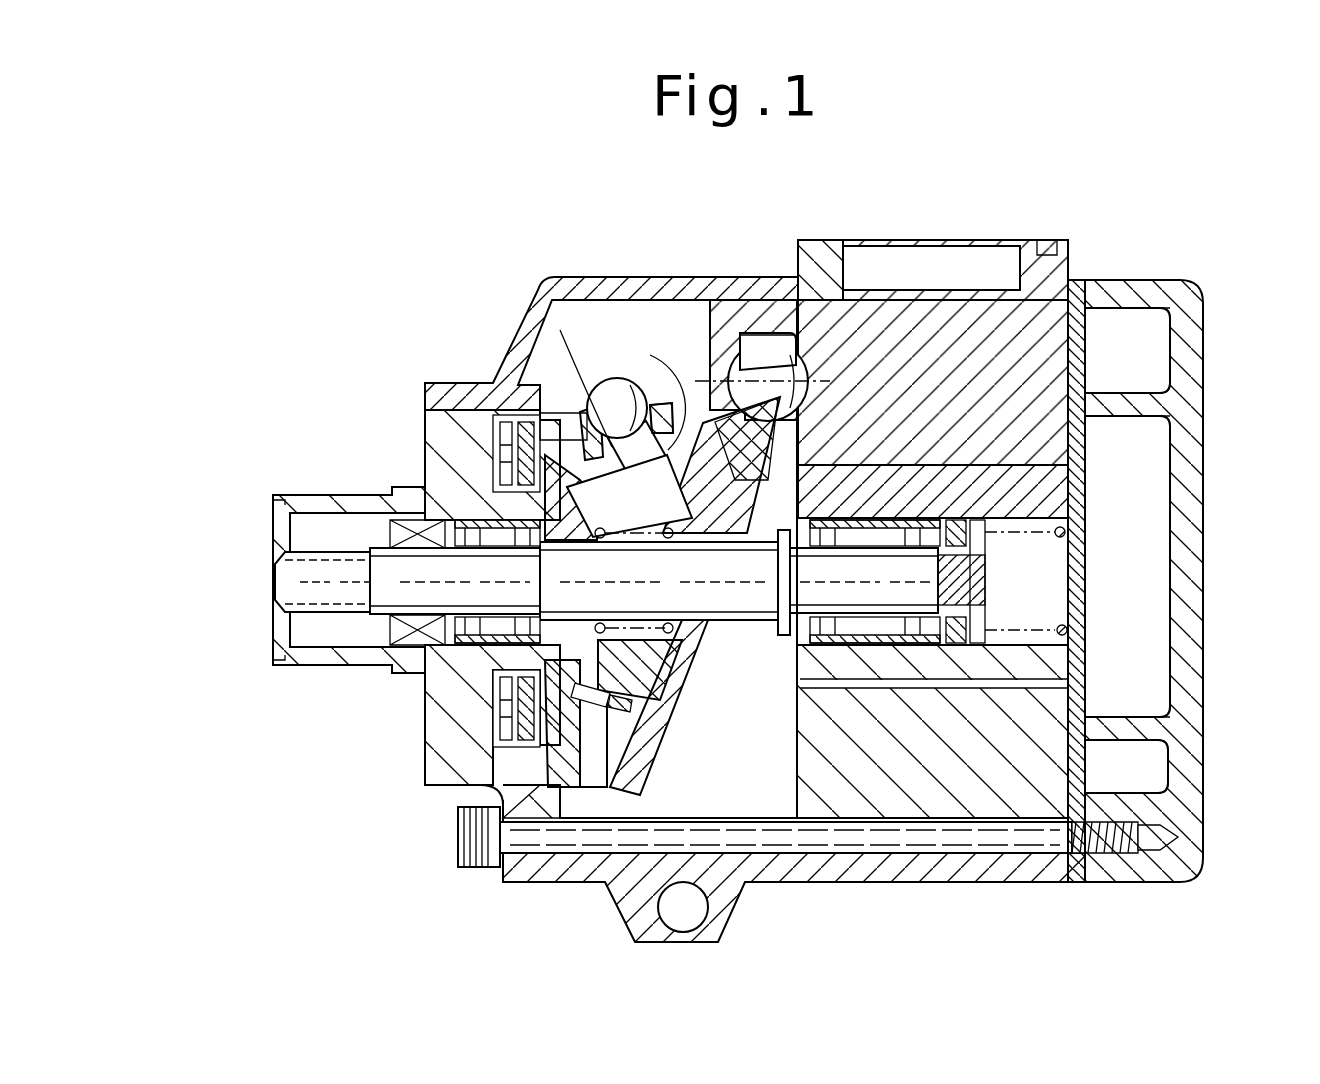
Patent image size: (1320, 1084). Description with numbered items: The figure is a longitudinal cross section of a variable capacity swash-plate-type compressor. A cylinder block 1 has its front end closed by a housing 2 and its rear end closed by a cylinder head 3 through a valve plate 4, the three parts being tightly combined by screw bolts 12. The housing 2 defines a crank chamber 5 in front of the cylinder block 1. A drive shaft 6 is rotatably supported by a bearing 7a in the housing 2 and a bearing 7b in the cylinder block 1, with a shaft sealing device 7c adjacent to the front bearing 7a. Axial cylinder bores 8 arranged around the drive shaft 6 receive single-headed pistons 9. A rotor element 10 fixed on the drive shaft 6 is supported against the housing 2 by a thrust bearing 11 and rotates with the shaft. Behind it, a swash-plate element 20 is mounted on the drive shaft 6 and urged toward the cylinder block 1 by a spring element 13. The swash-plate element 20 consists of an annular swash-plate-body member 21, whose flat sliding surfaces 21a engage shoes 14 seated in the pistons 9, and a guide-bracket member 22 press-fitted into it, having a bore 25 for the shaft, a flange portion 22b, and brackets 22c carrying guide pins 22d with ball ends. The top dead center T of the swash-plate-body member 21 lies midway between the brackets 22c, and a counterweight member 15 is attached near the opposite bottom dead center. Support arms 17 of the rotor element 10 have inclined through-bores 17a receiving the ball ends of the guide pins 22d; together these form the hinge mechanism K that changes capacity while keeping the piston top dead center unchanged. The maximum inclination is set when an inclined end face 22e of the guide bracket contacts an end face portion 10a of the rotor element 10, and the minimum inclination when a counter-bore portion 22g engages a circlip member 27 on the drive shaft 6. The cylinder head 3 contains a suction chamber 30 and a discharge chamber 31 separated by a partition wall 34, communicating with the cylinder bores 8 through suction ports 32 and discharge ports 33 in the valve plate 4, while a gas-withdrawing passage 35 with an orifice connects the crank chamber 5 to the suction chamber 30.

The cylinder block 1 is at (905, 862).
The housing 2 is at (533, 313).
The cylinder head 3 is at (1137, 865).
The valve plate 4 is at (1078, 283).
The crank chamber 5 is at (768, 806).
The drive shaft 6 is at (305, 585).
The bearing 7a is at (497, 540).
The bearing 7b is at (865, 540).
The shaft sealing device 7c is at (417, 540).
The cylinder bore 8 is at (948, 466).
The single-headed piston 9 is at (944, 388).
The rotor element 10 is at (500, 440).
The end face portion 10a is at (700, 675).
The thrust bearing 11 is at (500, 440).
The screw bolt 12 is at (458, 832).
The spring element 13 is at (672, 528).
The shoe 14 is at (745, 360).
The counterweight member 15 is at (590, 740).
The support arm 17 is at (545, 385).
The through-bore 17a is at (560, 330).
The swash-plate element 20 is at (697, 713).
The swash-plate-body member 21 is at (768, 455).
The sliding surface 21a is at (755, 340).
The guide-bracket member 22 is at (683, 707).
The flange portion 22b is at (603, 712).
The bracket 22c is at (632, 389).
The guide pin 22d is at (617, 385).
The inclined end face 22e is at (500, 676).
The counter-bore portion 22g is at (690, 625).
The bore 25 is at (693, 542).
The circlip member 27 is at (783, 640).
The suction chamber 30 is at (1143, 574).
The discharge chamber 31 is at (1152, 368).
The suction port 32 is at (1083, 438).
The discharge port 33 is at (1083, 332).
The partition wall 34 is at (1127, 723).
The gas-withdrawing passage 35 is at (963, 683).
The hinge mechanism K is at (597, 322).
The top dead center T is at (752, 382).